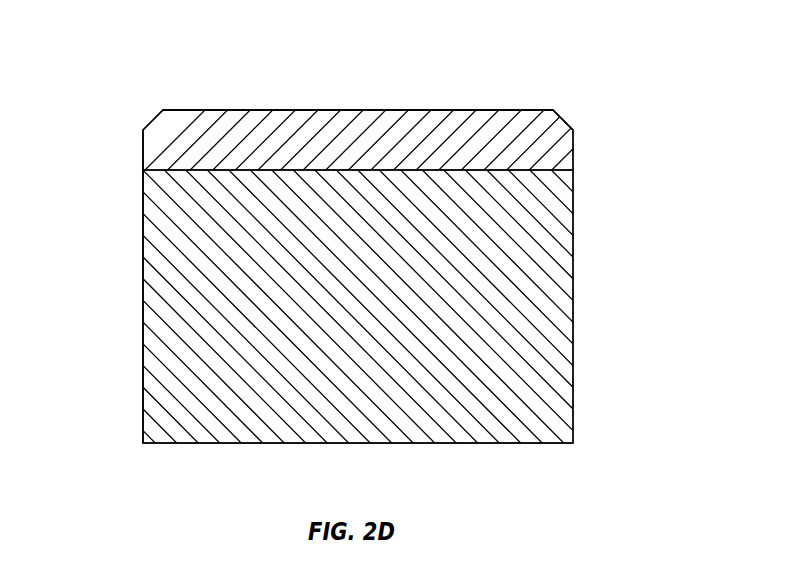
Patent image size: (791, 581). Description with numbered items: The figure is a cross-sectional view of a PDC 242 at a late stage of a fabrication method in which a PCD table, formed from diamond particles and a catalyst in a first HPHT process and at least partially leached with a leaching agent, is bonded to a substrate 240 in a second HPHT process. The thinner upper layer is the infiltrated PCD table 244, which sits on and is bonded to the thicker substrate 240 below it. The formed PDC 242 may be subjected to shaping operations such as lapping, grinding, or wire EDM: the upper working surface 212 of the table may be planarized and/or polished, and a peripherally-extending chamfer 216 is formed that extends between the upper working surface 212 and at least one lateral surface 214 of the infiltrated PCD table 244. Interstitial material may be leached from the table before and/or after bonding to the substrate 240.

The upper working surface 212 is at (322, 110).
The lateral surface 214 is at (143, 147).
The peripherally-extending chamfer 216 is at (562, 119).
The substrate 240 is at (574, 352).
The PDC 242 is at (532, 68).
The infiltrated PCD table 244 is at (545, 155).